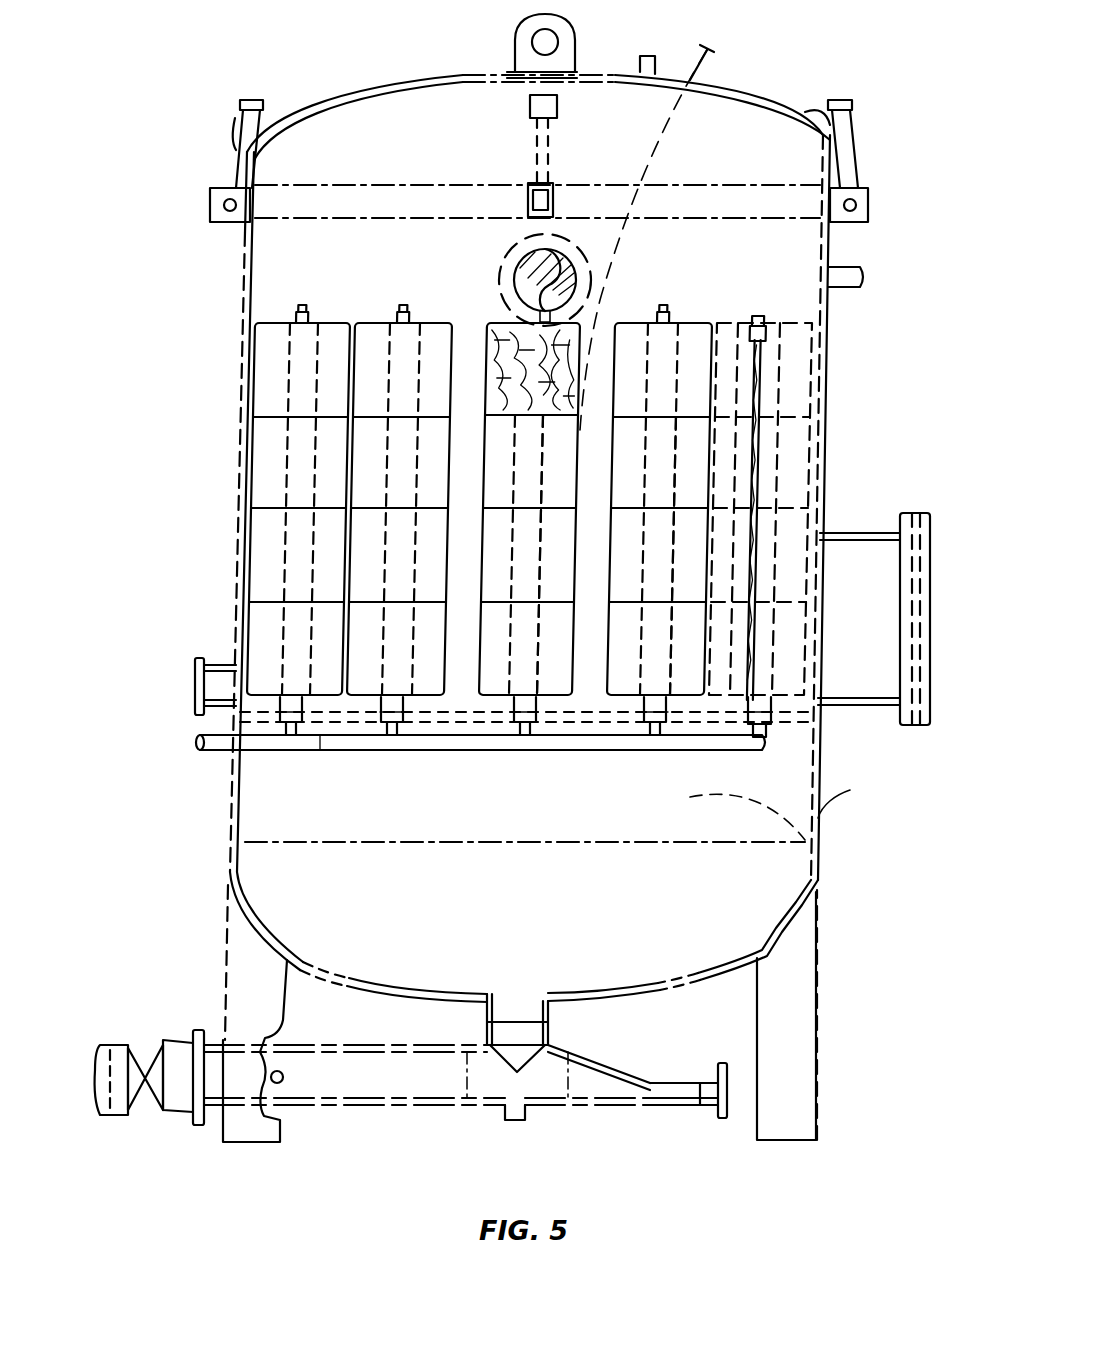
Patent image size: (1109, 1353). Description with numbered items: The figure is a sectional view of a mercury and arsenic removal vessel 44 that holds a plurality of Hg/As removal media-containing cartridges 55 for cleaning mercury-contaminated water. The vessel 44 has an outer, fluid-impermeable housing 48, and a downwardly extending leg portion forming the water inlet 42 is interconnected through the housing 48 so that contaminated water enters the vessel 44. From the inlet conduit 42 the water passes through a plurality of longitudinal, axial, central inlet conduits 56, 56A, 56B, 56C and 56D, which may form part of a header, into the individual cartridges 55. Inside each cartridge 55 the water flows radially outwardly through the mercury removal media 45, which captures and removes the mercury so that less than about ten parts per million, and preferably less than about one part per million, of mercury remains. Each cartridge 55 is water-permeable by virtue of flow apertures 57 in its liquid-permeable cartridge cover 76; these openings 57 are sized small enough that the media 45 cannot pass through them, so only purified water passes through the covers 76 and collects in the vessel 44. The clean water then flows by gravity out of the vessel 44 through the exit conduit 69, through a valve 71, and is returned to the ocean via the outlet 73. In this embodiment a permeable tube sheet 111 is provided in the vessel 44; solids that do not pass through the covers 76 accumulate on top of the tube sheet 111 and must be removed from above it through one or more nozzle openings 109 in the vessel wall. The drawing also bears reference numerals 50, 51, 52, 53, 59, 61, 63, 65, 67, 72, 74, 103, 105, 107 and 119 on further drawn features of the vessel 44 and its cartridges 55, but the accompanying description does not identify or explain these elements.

The water inlet conduit 42 is at (222, 748).
The vessel 44 is at (230, 305).
The mercury removal media 45 is at (487, 338).
The housing 48 is at (247, 243).
The support rod 50 is at (782, 398).
The support tube 51 is at (678, 430).
The cartridge core 52 is at (548, 483).
The filter element section 53 is at (385, 576).
The cartridge 55 is at (300, 388).
The central inlet conduit 56 is at (280, 717).
The central inlet conduit 56A is at (415, 716).
The central inlet conduit 56B is at (527, 717).
The central inlet conduit 56C is at (658, 717).
The central inlet conduit 56D is at (766, 713).
The flow aperture 57 is at (570, 312).
The fitting 59 is at (764, 726).
The fitting 61 is at (656, 724).
The fitting 63 is at (526, 728).
The fitting 65 is at (393, 724).
The fitting 67 is at (291, 724).
The exit conduit 69 is at (548, 1010).
The valve 71 is at (135, 1057).
The vent 72 is at (704, 82).
The outlet 73 is at (100, 1045).
The nozzle 74 is at (862, 277).
The cartridge cover 76 is at (593, 420).
The lower chamber 103 is at (295, 878).
The seam 105 is at (850, 790).
The inlet nozzle 107 is at (858, 563).
The nozzle opening 109 is at (195, 712).
The permeable tube sheet 111 is at (322, 748).
The baffle 119 is at (718, 811).